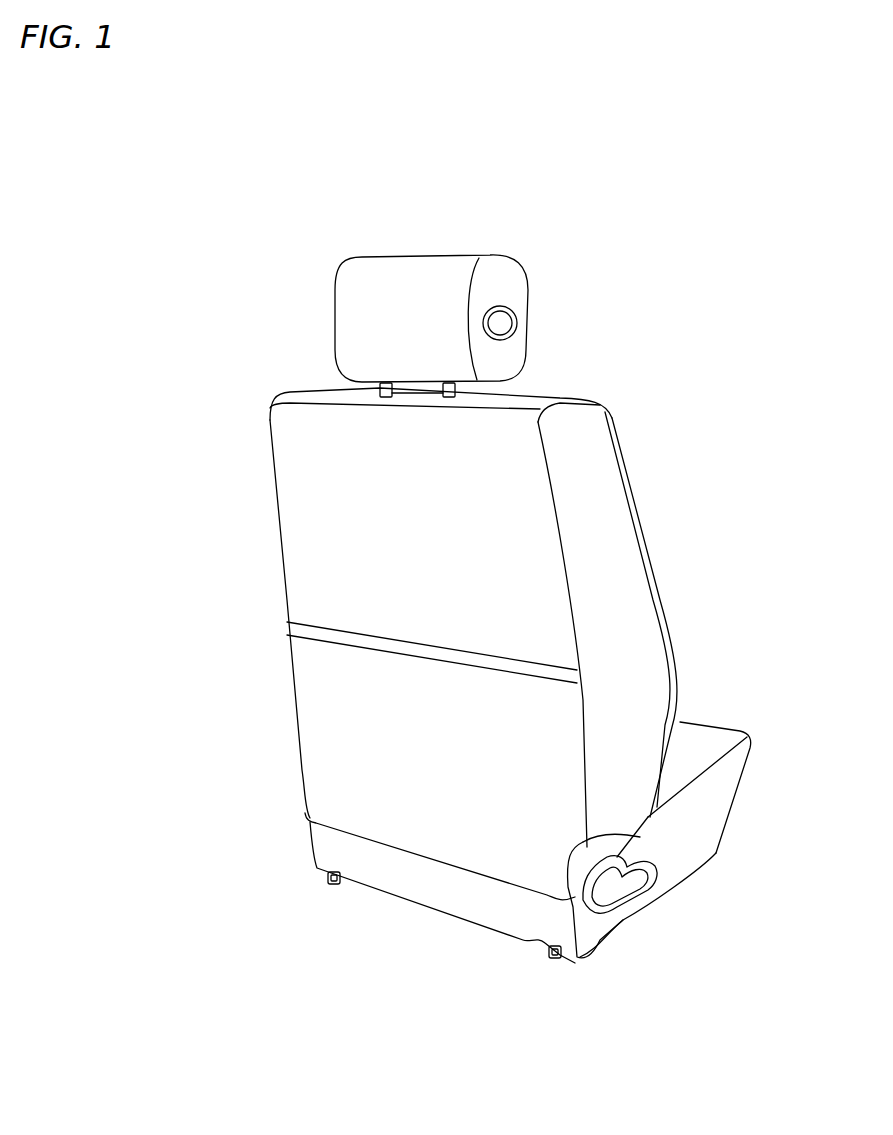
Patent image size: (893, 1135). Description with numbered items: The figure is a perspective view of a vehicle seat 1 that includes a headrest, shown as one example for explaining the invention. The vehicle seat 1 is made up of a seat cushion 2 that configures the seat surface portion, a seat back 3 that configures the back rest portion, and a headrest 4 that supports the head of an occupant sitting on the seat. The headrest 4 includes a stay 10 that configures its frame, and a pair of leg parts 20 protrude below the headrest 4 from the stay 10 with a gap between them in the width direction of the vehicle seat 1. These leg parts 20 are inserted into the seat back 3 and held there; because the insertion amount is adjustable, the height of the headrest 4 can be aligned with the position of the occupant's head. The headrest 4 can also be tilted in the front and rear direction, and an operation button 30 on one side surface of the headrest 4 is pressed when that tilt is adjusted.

The vehicle seat 1 is at (636, 260).
The seat cushion 2 is at (714, 722).
The seat back 3 is at (628, 496).
The headrest 4 is at (345, 262).
The stay 10 is at (378, 386).
The leg parts 20 is at (380, 393).
The operation button 30 is at (500, 323).